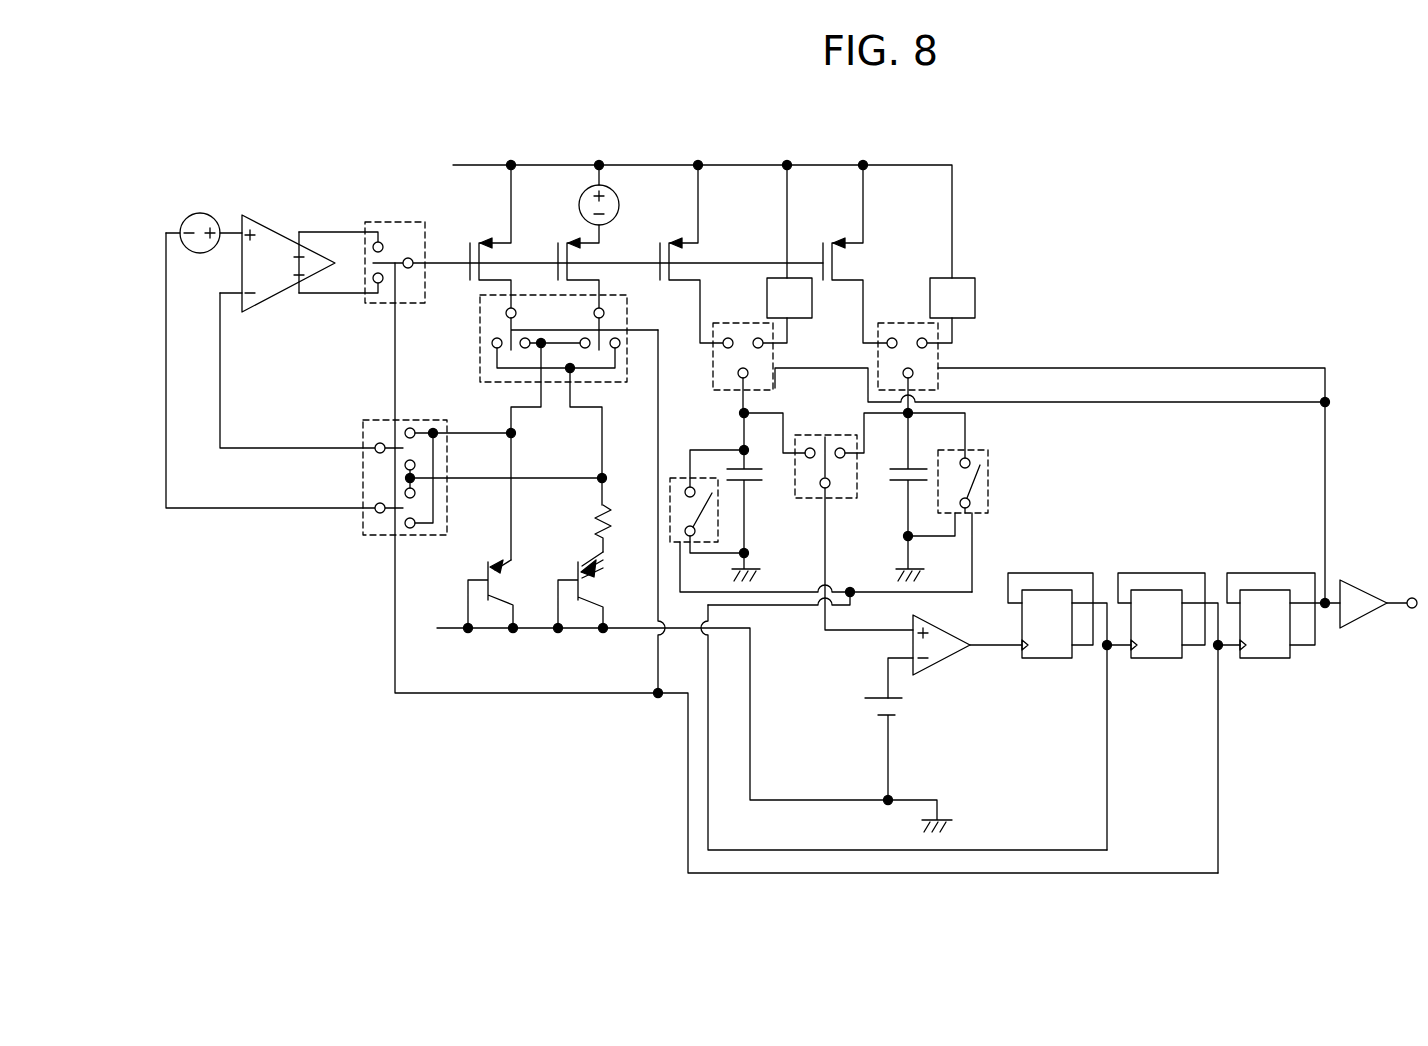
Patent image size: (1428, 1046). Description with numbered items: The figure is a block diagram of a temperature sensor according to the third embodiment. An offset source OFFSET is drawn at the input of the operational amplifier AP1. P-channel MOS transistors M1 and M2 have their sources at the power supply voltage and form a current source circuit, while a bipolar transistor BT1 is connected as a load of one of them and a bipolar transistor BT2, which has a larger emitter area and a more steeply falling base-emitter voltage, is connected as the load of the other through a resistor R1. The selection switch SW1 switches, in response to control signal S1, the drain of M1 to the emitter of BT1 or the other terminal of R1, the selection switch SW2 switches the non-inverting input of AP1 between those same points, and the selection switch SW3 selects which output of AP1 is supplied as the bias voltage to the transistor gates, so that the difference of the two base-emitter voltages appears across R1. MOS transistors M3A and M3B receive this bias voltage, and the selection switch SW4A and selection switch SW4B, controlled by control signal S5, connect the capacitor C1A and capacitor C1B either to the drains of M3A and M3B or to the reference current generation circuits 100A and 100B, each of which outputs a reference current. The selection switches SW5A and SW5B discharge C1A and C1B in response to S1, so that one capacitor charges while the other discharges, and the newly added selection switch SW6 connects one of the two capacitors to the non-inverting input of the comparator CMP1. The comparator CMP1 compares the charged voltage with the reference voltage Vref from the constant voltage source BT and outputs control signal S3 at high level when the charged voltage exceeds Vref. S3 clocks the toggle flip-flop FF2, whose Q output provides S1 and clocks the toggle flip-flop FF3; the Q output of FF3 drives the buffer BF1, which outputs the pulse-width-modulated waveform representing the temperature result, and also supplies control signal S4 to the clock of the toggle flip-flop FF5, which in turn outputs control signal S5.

The offset voltage source OFFSET is at (210, 215).
The operational amplifier AP1 is at (285, 222).
The selection switch SW3 is at (383, 305).
The selection switch SW1 is at (480, 362).
The selection switch SW2 is at (363, 525).
The P-channel MOS transistor M1 is at (470, 240).
The P-channel MOS transistor M2 is at (558, 240).
The MOS transistor M3A is at (684, 240).
The MOS transistor M3B is at (843, 238).
The bipolar transistor BT1 is at (488, 572).
The bipolar transistor BT2 is at (575, 568).
The resistor R1 is at (620, 528).
The reference current generation circuit 100A is at (812, 298).
The reference current generation circuit 100B is at (975, 290).
The selection switch SW4A is at (735, 322).
The selection switch SW4B is at (900, 322).
The selection switch SW5A is at (676, 478).
The selection switch SW5B is at (990, 488).
The selection switch SW6 is at (827, 434).
The capacitor C1A is at (755, 483).
The capacitor C1B is at (893, 483).
The comparator CMP1 is at (912, 645).
The constant voltage source BT is at (905, 695).
The reference voltage Vref is at (924, 727).
The control signal S3 is at (997, 642).
The flip-flop FF2 is at (1069, 711).
The flip-flop FF3 is at (1179, 723).
The flip-flop FF5 is at (1276, 645).
The buffer BF1 is at (1358, 580).
The control signal S5 is at (1347, 452).
The control signal S1 is at (1092, 840).
The control signal S4 is at (1237, 862).